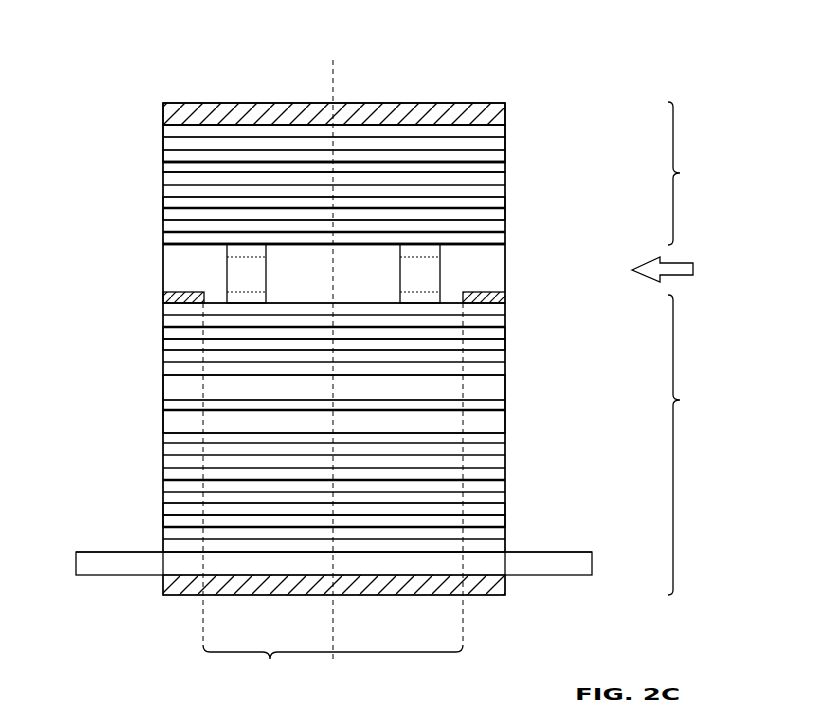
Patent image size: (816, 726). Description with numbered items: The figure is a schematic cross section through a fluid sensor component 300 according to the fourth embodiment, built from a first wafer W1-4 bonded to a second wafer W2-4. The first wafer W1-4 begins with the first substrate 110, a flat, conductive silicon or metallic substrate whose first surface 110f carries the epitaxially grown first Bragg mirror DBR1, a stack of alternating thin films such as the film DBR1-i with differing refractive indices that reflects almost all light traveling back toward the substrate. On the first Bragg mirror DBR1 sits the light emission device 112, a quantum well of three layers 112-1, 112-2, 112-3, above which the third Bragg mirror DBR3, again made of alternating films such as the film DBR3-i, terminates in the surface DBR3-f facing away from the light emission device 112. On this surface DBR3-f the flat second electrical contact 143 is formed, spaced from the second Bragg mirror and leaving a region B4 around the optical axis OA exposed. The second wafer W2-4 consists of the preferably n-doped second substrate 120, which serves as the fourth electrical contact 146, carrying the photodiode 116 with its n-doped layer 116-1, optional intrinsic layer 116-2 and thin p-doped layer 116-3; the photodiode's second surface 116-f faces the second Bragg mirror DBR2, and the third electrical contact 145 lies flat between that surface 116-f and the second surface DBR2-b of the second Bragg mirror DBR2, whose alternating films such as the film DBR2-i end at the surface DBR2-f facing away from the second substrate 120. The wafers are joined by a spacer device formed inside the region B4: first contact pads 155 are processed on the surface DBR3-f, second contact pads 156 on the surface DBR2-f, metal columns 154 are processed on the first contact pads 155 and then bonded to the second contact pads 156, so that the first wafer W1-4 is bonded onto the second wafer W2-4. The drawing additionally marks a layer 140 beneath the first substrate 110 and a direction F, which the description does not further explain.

The fluid sensor component 300 is at (140, 82).
The first substrate 110 is at (567, 565).
The first surface of the first substrate 110f is at (568, 551).
The bottom contact layer 140 is at (490, 585).
The second substrate 120 is at (503, 112).
The fourth electrical contact 146 is at (452, 112).
The photodiode 116 is at (163, 162).
The p-doped layer 116-3 is at (503, 131).
The intrinsic layer 116-2 is at (497, 143).
The n-doped layer 116-1 is at (500, 153).
The second surface of the photodiode 116-f is at (251, 158).
The third electrical contact 145 is at (172, 166).
The second Bragg mirror DBR2 is at (163, 244).
The second surface of the second Bragg mirror DBR2-b is at (384, 170).
The first thin film of the second Bragg mirror DBR2-i is at (497, 212).
The surface of the second Bragg mirror facing away from the second substrate DBR2-f is at (500, 242).
The second wafer W2-4 is at (701, 173).
The first wafer W1-4 is at (701, 445).
The force direction F is at (694, 269).
The metal columns 154 is at (232, 271).
The second contact pads 156 is at (262, 256).
The first contact pads 155 is at (262, 290).
The second electrical contact 143 is at (170, 297).
The third Bragg mirror DBR3 is at (163, 375).
The surface of the third Bragg mirror facing away from the light emission device DBR3-f is at (458, 299).
The first thin film of the third Bragg mirror DBR3-i is at (500, 347).
The light emission device 112 is at (163, 433).
The third layer of the light emission device 112-3 is at (500, 386).
The second layer of the light emission device 112-2 is at (497, 405).
The first layer of the light emission device 112-1 is at (497, 424).
The first Bragg mirror DBR1 is at (163, 433).
The first thin film of the first Bragg mirror DBR1-i is at (505, 520).
The optical axis OA is at (335, 622).
The region around the optical axis B4 is at (333, 494).